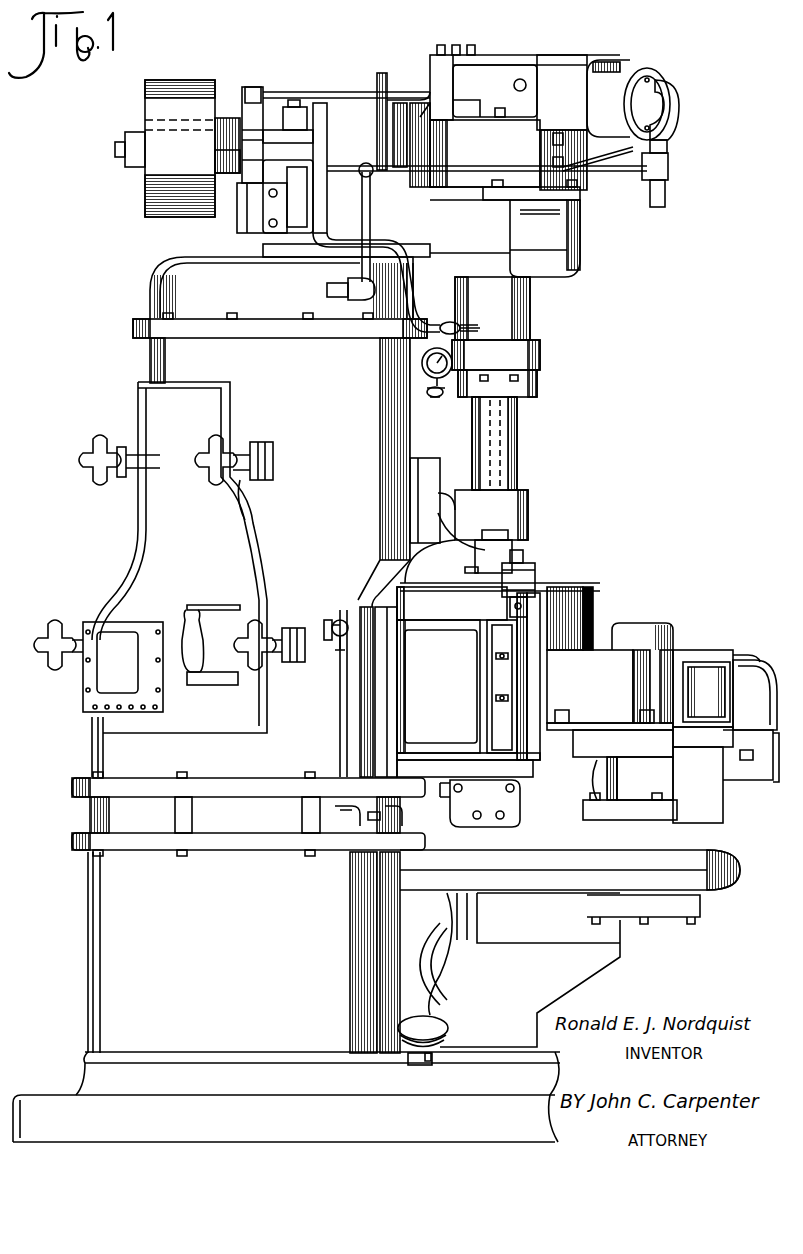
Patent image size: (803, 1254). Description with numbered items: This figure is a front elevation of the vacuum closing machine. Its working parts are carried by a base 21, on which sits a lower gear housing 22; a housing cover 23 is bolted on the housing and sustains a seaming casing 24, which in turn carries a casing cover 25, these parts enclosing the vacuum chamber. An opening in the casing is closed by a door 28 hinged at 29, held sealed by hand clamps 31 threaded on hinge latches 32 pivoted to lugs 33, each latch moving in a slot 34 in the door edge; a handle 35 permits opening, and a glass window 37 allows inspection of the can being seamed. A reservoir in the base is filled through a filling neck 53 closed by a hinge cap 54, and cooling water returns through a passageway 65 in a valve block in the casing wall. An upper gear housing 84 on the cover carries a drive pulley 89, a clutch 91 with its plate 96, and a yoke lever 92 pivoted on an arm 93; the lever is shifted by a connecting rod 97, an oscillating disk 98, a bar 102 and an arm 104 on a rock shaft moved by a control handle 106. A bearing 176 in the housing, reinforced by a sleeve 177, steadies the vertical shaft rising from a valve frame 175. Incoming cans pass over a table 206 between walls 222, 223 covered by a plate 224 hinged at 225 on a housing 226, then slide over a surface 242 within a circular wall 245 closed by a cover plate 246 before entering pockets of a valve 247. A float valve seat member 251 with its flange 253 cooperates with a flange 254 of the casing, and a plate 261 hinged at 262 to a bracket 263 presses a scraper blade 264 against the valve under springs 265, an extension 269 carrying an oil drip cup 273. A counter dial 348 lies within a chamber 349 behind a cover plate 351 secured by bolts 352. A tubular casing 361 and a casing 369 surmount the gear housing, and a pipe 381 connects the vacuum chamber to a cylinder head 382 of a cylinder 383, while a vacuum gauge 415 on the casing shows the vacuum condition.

The base 21 is at (286, 1097).
The lower gear housing 22 is at (318, 973).
The housing cover 23 is at (248, 814).
The seaming casing 24 is at (280, 472).
The casing cover 25 is at (280, 297).
The door 28 is at (152, 518).
The hinge 29 is at (130, 460).
The hand clamps 31 is at (86, 467).
The hinge latches 32 is at (253, 478).
The lugs 33 is at (272, 455).
The slot 34 is at (240, 487).
The handle 35 is at (173, 620).
The glass window 37 is at (103, 683).
The filling neck 53 is at (415, 1055).
The hinge cap 54 is at (440, 1027).
The passageway 65 is at (323, 625).
The upper gear housing 84 is at (582, 235).
The drive pulley 89 is at (173, 92).
The clutch 91 is at (230, 138).
The yoke lever 92 is at (258, 112).
The arm 93 is at (248, 148).
The plate 96 is at (228, 157).
The connecting rod 97 is at (282, 92).
The oscillating disk 98 is at (380, 80).
The bar 102 is at (400, 62).
The arm 104 is at (308, 128).
The control handle 106 is at (411, 247).
The valve frame 175 is at (703, 858).
The bearing 176 is at (537, 310).
The sleeve 177 is at (520, 437).
The table 206 is at (726, 776).
The wall 222 is at (685, 663).
The wall 223 is at (690, 770).
The plate 224 is at (693, 652).
The hinge 225 is at (752, 653).
The housing 226 is at (707, 727).
The surface 242 is at (527, 753).
The circular wall 245 is at (610, 690).
The cover plate 246 is at (605, 650).
The valve 247 is at (598, 597).
The float valve seat member 251 is at (438, 686).
The flange 253 is at (387, 708).
The flange 254 is at (365, 739).
The plate 261 is at (540, 630).
The hinge 262 is at (495, 633).
The bracket 263 is at (488, 668).
The scraper blade 264 is at (532, 730).
The springs 265 is at (512, 657).
The extension 269 is at (527, 623).
The oil drip cup 273 is at (537, 573).
The dial 348 is at (470, 797).
The chamber 349 is at (453, 789).
The cover plate 351 is at (493, 793).
The bolts 352 is at (517, 803).
The tubular casing 361 is at (531, 155).
The casing 369 is at (447, 67).
The pipe 381 is at (372, 205).
The cylinder head 382 is at (671, 97).
The cylinder 383 is at (618, 83).
The vacuum gauge 415 is at (420, 365).